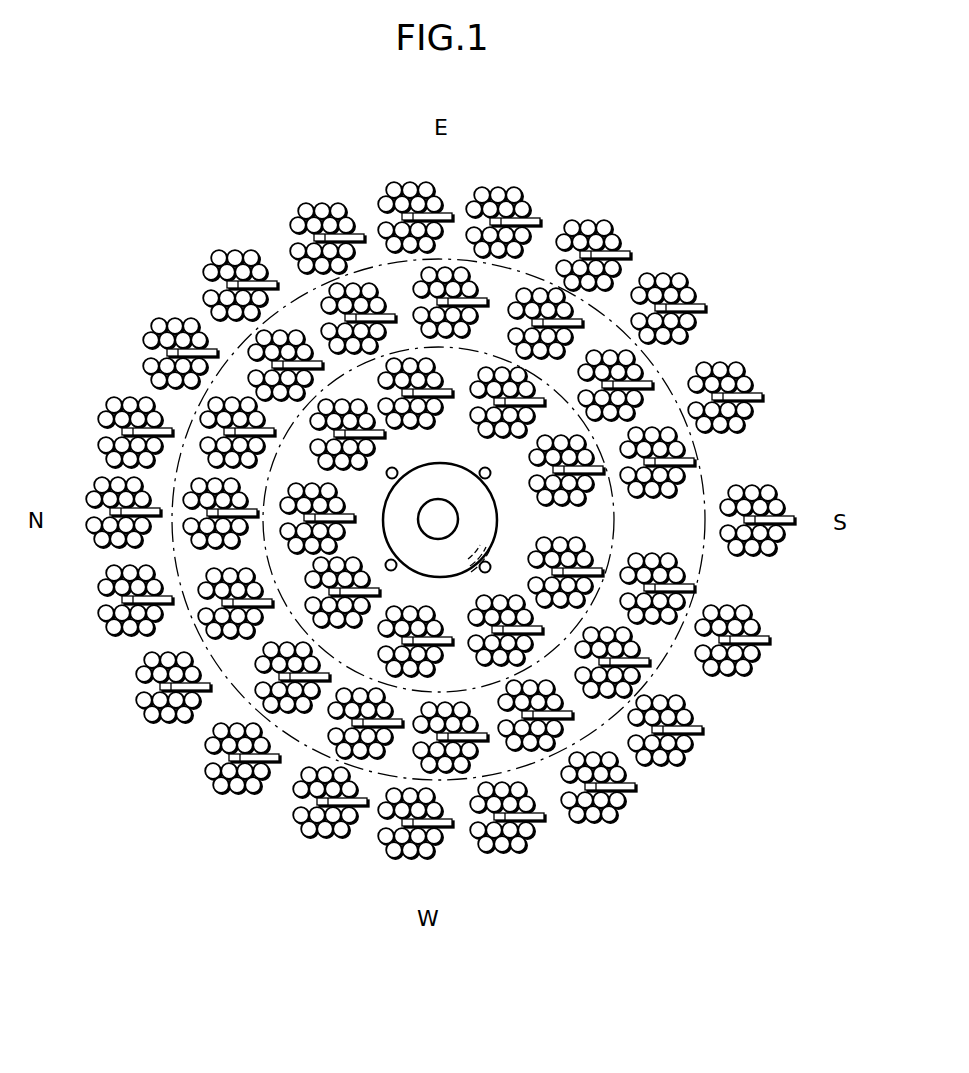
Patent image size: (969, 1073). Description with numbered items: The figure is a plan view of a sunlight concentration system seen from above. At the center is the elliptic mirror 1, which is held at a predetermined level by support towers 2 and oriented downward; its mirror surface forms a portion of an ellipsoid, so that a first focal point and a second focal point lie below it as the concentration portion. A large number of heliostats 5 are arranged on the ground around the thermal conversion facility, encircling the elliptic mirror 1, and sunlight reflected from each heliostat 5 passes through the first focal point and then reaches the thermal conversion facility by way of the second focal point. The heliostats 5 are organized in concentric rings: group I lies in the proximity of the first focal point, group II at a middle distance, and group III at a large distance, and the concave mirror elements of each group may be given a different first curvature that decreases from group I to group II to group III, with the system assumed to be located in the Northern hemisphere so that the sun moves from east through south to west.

The elliptic mirror 1 is at (470, 523).
The support towers 2 is at (481, 468).
The heliostats 5 is at (686, 260).
The group I is at (438, 519).
The group II is at (438, 519).
The group III is at (441, 520).